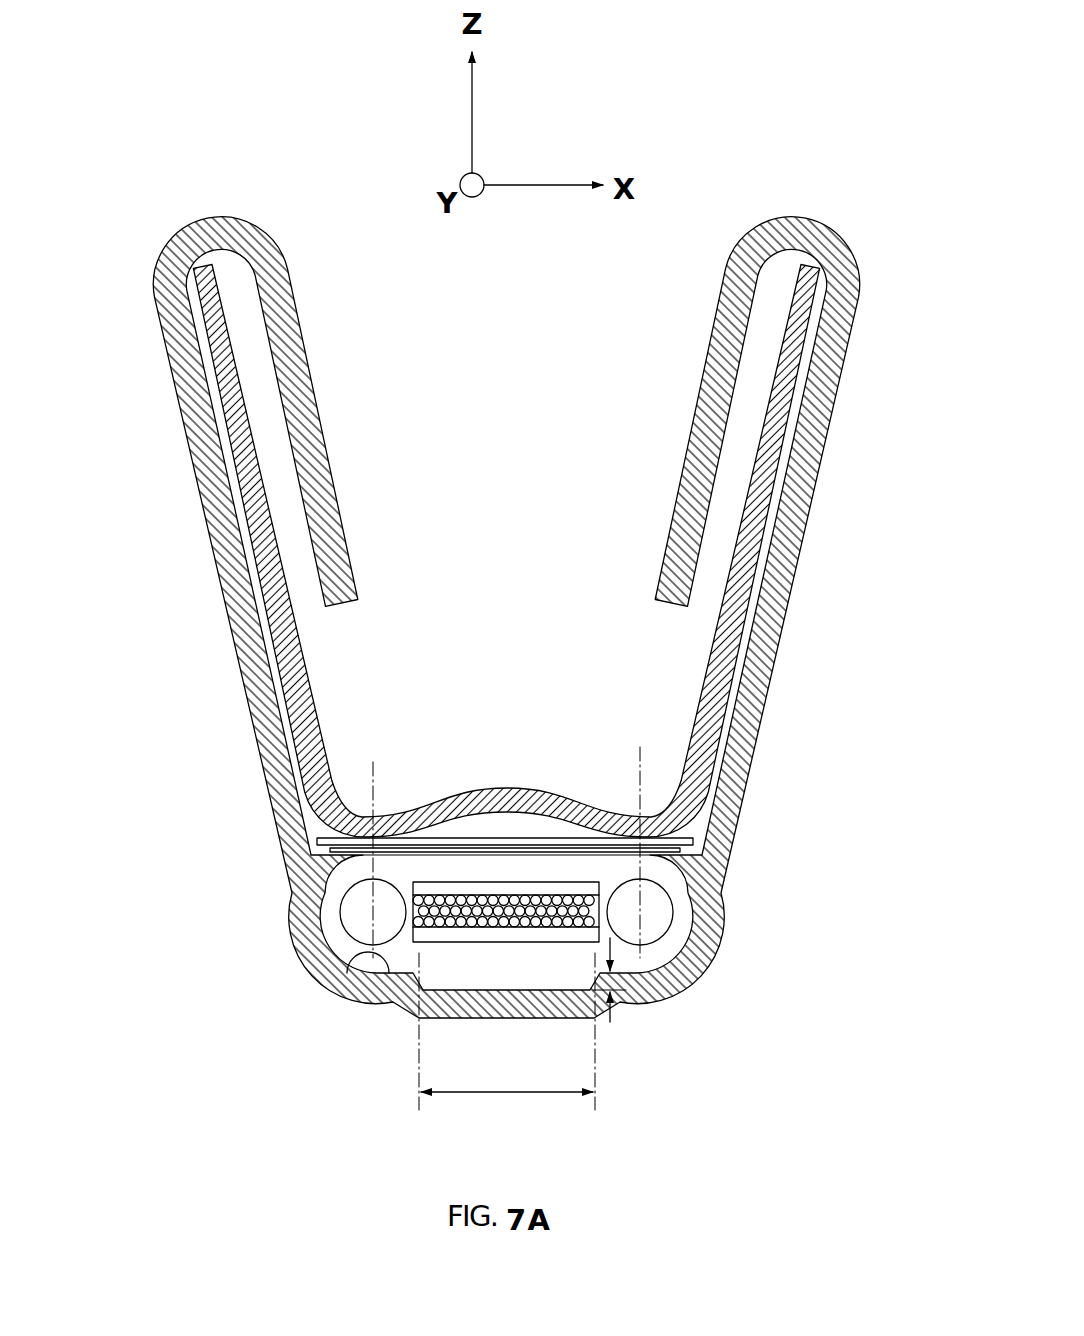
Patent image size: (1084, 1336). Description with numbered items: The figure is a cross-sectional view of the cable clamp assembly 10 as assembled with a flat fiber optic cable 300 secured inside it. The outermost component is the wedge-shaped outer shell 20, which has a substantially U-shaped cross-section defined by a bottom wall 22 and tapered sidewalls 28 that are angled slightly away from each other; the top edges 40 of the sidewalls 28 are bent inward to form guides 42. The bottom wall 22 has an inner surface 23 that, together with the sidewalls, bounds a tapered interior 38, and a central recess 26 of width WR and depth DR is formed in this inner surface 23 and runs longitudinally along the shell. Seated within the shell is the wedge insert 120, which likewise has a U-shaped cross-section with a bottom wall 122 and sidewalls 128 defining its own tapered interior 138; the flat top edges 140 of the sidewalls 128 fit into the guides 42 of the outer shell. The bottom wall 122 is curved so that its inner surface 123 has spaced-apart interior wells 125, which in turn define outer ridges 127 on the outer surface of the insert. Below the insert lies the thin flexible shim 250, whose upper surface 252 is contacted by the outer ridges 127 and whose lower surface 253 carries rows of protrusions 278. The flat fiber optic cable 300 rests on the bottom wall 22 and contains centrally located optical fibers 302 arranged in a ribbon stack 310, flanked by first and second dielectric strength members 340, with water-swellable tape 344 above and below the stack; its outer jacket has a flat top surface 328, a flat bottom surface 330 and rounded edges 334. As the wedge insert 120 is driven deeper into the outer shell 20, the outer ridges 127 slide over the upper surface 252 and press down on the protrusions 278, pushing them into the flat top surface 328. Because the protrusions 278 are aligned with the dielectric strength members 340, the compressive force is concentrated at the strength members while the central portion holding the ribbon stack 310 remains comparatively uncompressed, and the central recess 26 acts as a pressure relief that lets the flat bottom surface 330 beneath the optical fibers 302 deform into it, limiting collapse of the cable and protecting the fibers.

The assembly 10 is at (141, 493).
The outer shell 20 is at (838, 485).
The bottom wall 22 is at (391, 1004).
The inner surface 23 is at (357, 954).
The central recess 26 is at (507, 991).
The sidewalls 28 is at (827, 438).
The tapered interior 38 is at (256, 583).
The top edges 40 is at (197, 217).
The guides 42 is at (359, 599).
The insert 120 is at (817, 297).
The bottom wall 122 is at (480, 783).
The inner surface 123 is at (588, 838).
The interior wells 125 is at (365, 808).
The outer ridges 127 is at (322, 895).
The sidewalls 128 is at (804, 341).
The tapered interior 138 is at (666, 660).
The flat top edges 140 is at (218, 281).
The shim 250 is at (700, 841).
The upper surface 252 is at (591, 836).
The lower surface 253 is at (476, 850).
The protrusions 278 is at (360, 858).
The flat fiber optic cable 300 is at (659, 954).
The optical fibers 302 is at (466, 923).
The ribbon stack 310 is at (496, 901).
The flat top surface 328 is at (538, 853).
The flat bottom surface 330 is at (544, 991).
The rounded edges 334 is at (345, 912).
The dielectric strength members 340 is at (326, 913).
The water-swellable tape 344 is at (507, 895).
The depth DR is at (617, 1014).
The width WR is at (543, 1100).